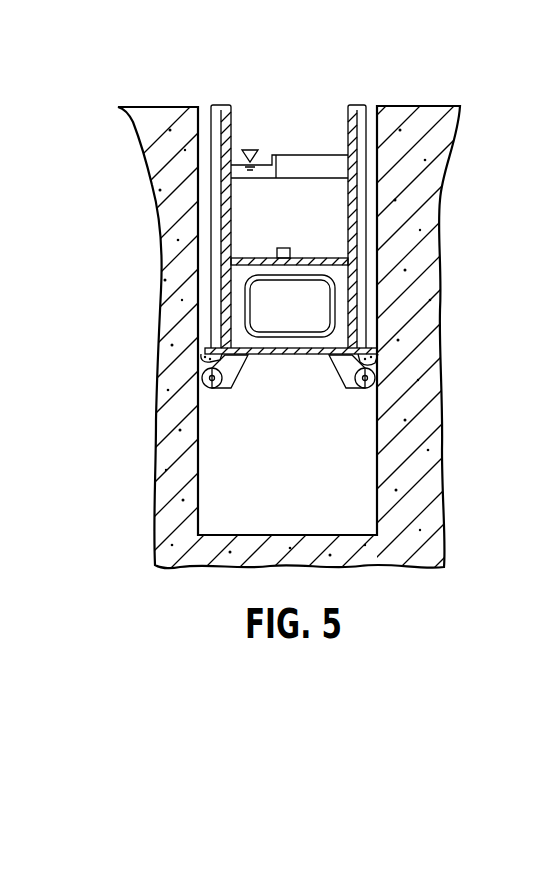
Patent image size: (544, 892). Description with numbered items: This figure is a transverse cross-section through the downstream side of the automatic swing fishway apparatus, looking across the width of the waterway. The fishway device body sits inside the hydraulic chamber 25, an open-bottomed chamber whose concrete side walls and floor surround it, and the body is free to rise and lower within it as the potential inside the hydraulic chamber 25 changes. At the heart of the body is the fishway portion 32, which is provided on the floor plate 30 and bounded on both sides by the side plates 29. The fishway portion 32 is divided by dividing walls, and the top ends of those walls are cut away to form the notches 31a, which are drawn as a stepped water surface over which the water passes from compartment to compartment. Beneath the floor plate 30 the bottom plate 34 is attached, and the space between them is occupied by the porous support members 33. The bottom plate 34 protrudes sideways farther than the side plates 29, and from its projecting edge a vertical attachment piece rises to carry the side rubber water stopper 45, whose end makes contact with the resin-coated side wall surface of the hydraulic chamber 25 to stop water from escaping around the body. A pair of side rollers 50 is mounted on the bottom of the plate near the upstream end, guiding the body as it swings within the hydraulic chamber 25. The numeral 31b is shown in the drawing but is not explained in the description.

The hydraulic chamber 25 is at (424, 458).
The side plates 29 is at (208, 268).
The floor plate 30 is at (243, 280).
The notches 31a is at (273, 157).
The connecting line 31b is at (278, 253).
The fishway portion 32 is at (317, 219).
The porous support members 33 is at (340, 279).
The bottom plate 34 is at (285, 356).
The side rubber water stopper 45 is at (372, 354).
The side rollers 50 is at (365, 388).